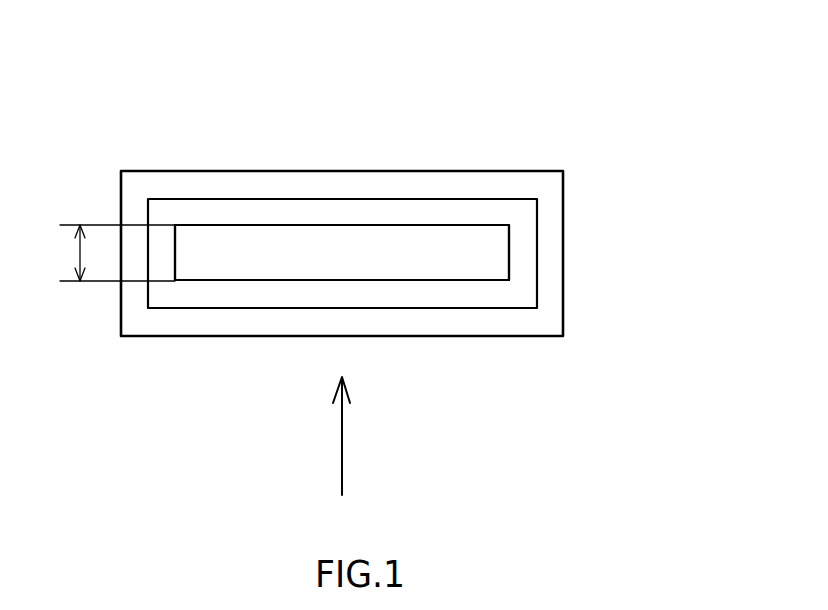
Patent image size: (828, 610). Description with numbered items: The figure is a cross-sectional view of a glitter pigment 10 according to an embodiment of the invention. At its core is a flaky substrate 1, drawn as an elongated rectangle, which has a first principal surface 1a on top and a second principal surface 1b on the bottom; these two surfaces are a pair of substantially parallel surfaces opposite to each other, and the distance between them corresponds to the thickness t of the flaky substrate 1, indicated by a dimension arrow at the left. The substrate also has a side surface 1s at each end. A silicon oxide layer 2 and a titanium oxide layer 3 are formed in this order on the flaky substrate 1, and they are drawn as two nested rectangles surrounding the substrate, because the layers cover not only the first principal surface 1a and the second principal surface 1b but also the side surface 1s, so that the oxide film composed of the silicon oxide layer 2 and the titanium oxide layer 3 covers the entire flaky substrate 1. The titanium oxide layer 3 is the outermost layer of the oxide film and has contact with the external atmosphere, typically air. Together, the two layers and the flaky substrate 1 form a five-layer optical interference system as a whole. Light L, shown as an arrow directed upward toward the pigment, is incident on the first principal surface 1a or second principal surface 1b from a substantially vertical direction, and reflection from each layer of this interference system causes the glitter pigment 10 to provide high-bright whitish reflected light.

The glitter pigment 10 is at (463, 122).
The flaky substrate 1 is at (473, 247).
The first principal surface 1a is at (305, 224).
The second principal surface 1b is at (425, 281).
The side surface 1s is at (510, 267).
The silicon oxide layer 2 is at (520, 224).
The titanium oxide layer 3 is at (543, 183).
The thickness of the flaky substrate t is at (117, 253).
The light L is at (343, 430).